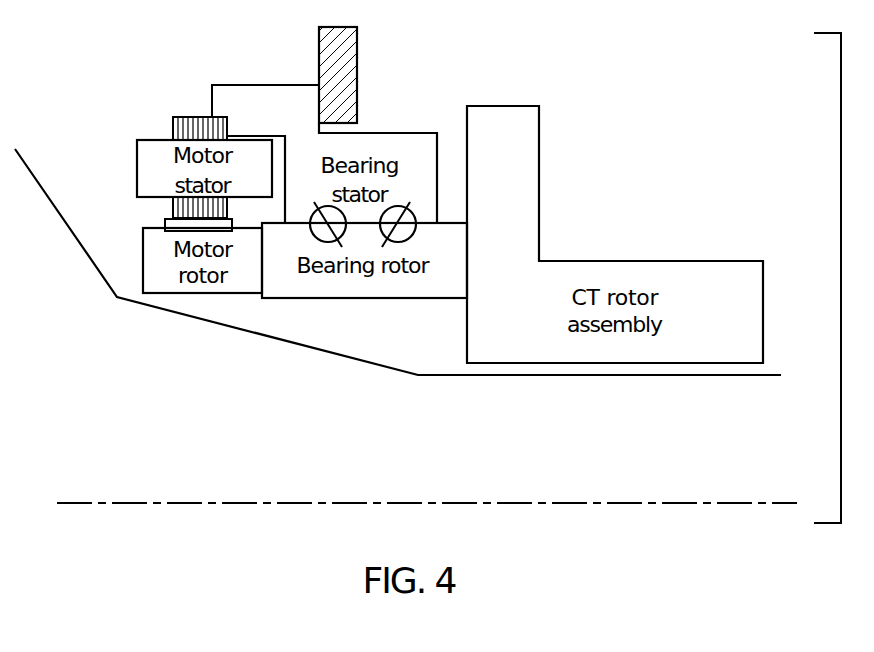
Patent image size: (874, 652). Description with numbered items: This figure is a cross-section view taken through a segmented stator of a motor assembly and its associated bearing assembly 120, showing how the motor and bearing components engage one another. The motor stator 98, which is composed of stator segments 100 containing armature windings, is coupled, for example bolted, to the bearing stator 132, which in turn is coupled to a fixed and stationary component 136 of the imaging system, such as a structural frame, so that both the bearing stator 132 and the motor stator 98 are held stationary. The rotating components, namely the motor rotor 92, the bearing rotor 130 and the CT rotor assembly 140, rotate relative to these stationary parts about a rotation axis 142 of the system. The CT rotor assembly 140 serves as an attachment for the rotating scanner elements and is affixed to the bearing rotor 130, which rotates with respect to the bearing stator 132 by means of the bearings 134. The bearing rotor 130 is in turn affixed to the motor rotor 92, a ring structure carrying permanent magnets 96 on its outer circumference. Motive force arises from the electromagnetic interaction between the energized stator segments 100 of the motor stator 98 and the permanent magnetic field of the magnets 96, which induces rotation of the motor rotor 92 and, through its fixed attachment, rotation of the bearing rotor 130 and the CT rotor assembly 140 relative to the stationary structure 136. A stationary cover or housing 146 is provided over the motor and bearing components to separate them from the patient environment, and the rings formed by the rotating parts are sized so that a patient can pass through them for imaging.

The motor rotor 92 is at (140, 265).
The permanent magnets 96 is at (153, 218).
The motor stator 98 is at (172, 154).
The stator segments 100 is at (152, 140).
The bearing assembly 120 is at (417, 196).
The bearing rotor 130 is at (355, 298).
The bearing stator 132 is at (398, 133).
The bearings 134 is at (340, 239).
The stationary component 136 is at (318, 63).
The CT rotor assembly 140 is at (707, 261).
The rotation axis 142 is at (388, 503).
The stationary cover or housing 146 is at (213, 323).